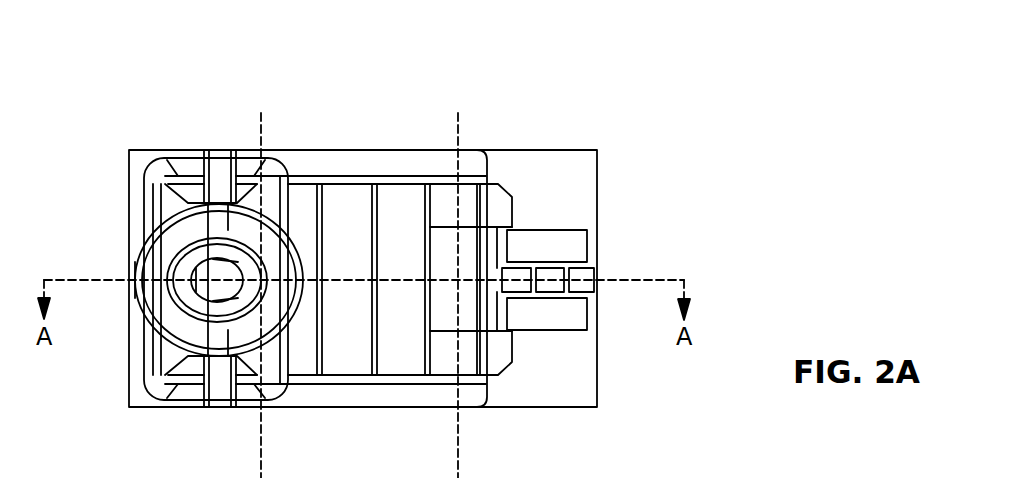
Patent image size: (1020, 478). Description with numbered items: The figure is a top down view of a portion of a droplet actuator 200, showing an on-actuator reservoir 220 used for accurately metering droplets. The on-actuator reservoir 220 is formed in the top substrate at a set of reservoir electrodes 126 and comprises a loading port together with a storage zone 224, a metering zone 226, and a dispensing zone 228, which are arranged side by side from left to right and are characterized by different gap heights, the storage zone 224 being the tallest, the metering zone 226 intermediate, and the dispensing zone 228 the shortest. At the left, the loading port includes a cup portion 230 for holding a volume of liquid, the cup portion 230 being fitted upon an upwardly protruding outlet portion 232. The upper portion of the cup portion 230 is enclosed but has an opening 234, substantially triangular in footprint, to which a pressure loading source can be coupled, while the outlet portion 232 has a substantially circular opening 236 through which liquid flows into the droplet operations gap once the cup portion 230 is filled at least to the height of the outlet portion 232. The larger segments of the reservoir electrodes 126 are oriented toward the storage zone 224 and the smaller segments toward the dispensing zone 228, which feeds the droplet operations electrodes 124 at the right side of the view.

The droplet actuator 200 is at (103, 43).
The on-actuator reservoir 220 is at (470, 140).
The storage zone 224 is at (250, 450).
The metering zone 226 is at (448, 450).
The dispensing zone 228 is at (598, 450).
The cup portion 230 is at (168, 220).
The outlet portion 232 is at (171, 252).
The opening 234 is at (230, 237).
The opening 236 is at (195, 294).
The reservoir electrodes 126 is at (512, 193).
The droplet operations electrodes 124 is at (588, 267).